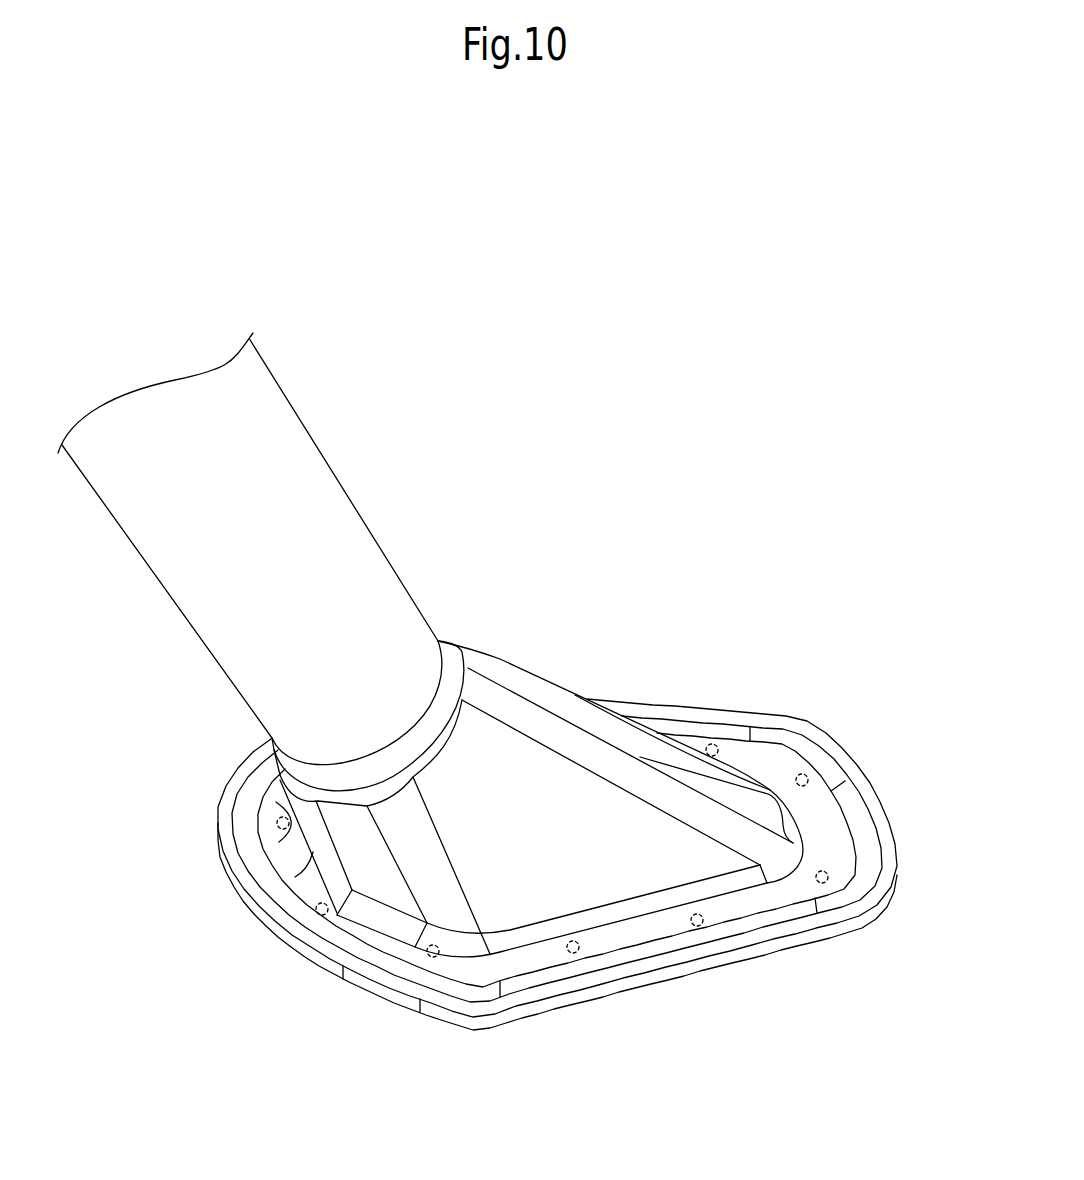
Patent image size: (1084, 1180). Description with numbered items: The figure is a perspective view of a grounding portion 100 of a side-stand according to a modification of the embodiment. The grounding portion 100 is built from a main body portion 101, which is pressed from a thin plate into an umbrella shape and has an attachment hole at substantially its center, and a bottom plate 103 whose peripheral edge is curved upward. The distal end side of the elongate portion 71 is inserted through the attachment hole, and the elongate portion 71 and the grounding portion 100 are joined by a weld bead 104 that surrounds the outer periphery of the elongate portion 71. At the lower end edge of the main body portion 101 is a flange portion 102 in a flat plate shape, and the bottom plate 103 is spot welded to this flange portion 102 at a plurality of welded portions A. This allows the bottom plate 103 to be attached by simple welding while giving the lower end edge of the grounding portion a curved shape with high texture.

The elongate portion 71 is at (263, 429).
The grounding portion 100 is at (547, 677).
The main body portion 101 is at (600, 723).
The flange portion 102 is at (837, 860).
The bottom plate 103 is at (863, 797).
The weld bead 104 is at (453, 665).
The welded portion A is at (800, 773).